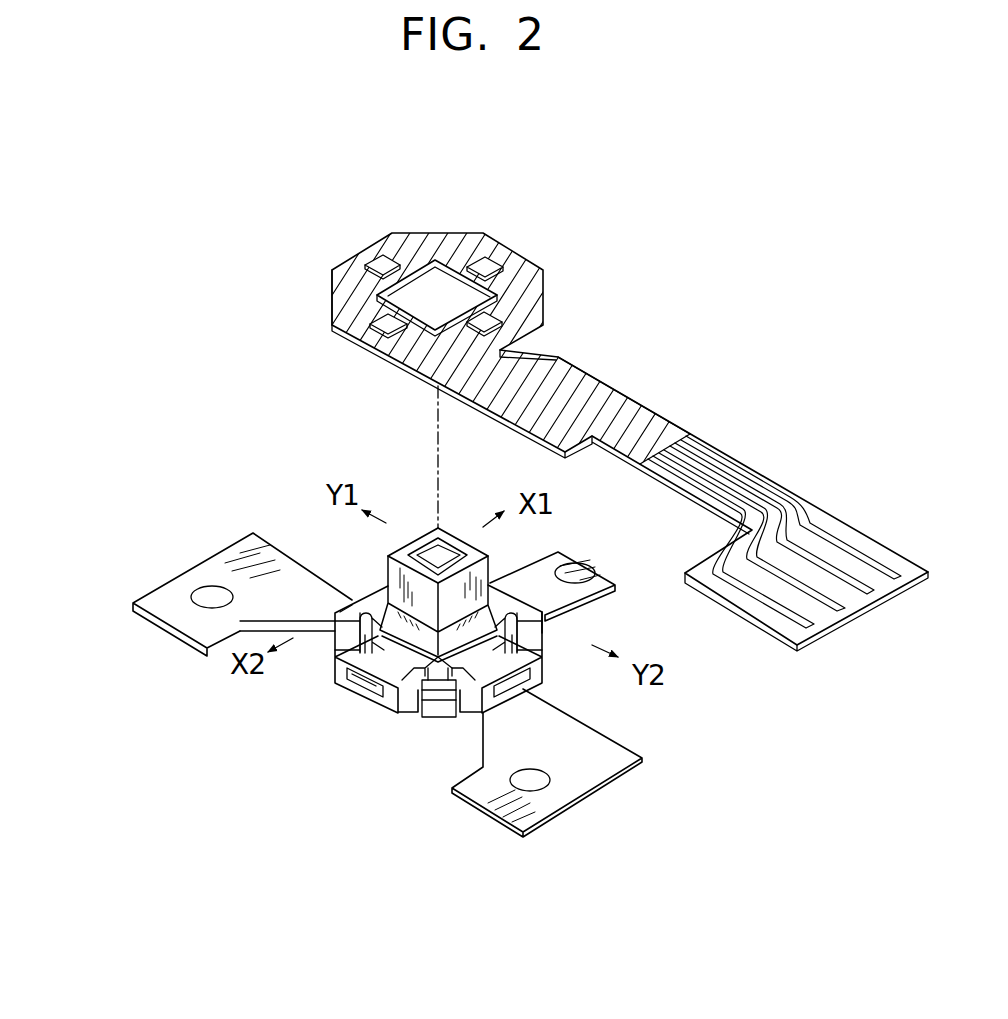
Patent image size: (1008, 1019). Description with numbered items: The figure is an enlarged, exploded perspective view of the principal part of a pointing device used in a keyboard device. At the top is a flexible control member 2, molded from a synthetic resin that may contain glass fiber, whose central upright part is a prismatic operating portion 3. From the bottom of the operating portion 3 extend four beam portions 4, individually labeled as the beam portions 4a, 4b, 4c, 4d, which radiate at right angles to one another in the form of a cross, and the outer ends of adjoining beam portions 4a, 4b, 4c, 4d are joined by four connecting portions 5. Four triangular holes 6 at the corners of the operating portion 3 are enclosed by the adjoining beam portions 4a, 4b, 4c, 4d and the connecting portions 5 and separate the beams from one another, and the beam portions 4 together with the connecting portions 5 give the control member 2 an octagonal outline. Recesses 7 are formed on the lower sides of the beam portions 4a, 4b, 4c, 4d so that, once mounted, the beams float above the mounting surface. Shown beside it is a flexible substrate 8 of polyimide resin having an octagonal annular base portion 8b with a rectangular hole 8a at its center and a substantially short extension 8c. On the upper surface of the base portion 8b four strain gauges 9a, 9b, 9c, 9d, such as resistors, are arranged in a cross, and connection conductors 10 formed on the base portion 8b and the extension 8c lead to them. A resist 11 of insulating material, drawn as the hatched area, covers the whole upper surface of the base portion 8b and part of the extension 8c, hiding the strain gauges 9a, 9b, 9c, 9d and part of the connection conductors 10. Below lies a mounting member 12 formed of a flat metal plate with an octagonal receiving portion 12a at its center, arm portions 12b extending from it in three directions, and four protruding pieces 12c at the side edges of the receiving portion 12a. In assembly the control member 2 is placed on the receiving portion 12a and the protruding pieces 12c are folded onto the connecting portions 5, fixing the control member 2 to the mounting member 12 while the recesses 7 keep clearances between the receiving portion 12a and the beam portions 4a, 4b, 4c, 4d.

The control member 2 is at (392, 477).
The operating portion 3 is at (452, 530).
The holder base 4 is at (450, 654).
The beam portion 4a is at (398, 674).
The beam portion 4b is at (510, 602).
The beam portion 4c is at (492, 667).
The beam portion 4d is at (375, 598).
The connecting portion 5 is at (422, 712).
The triangular hole 6 is at (360, 637).
The recess 7 is at (357, 690).
The flexible substrate 8 is at (517, 414).
The rectangular hole 8a is at (437, 282).
The base portion 8b is at (360, 252).
The extension 8c is at (730, 456).
The strain gauge 9a is at (390, 333).
The strain gauge 9b is at (487, 265).
The strain gauge 9c is at (487, 318).
The strain gauge 9d is at (381, 262).
The connection conductor 10 is at (795, 494).
The resist 11 is at (605, 395).
The mounting member 12 is at (205, 658).
The receiving portion 12a is at (338, 688).
The arm portion 12b is at (577, 777).
The protruding piece 12c is at (345, 636).